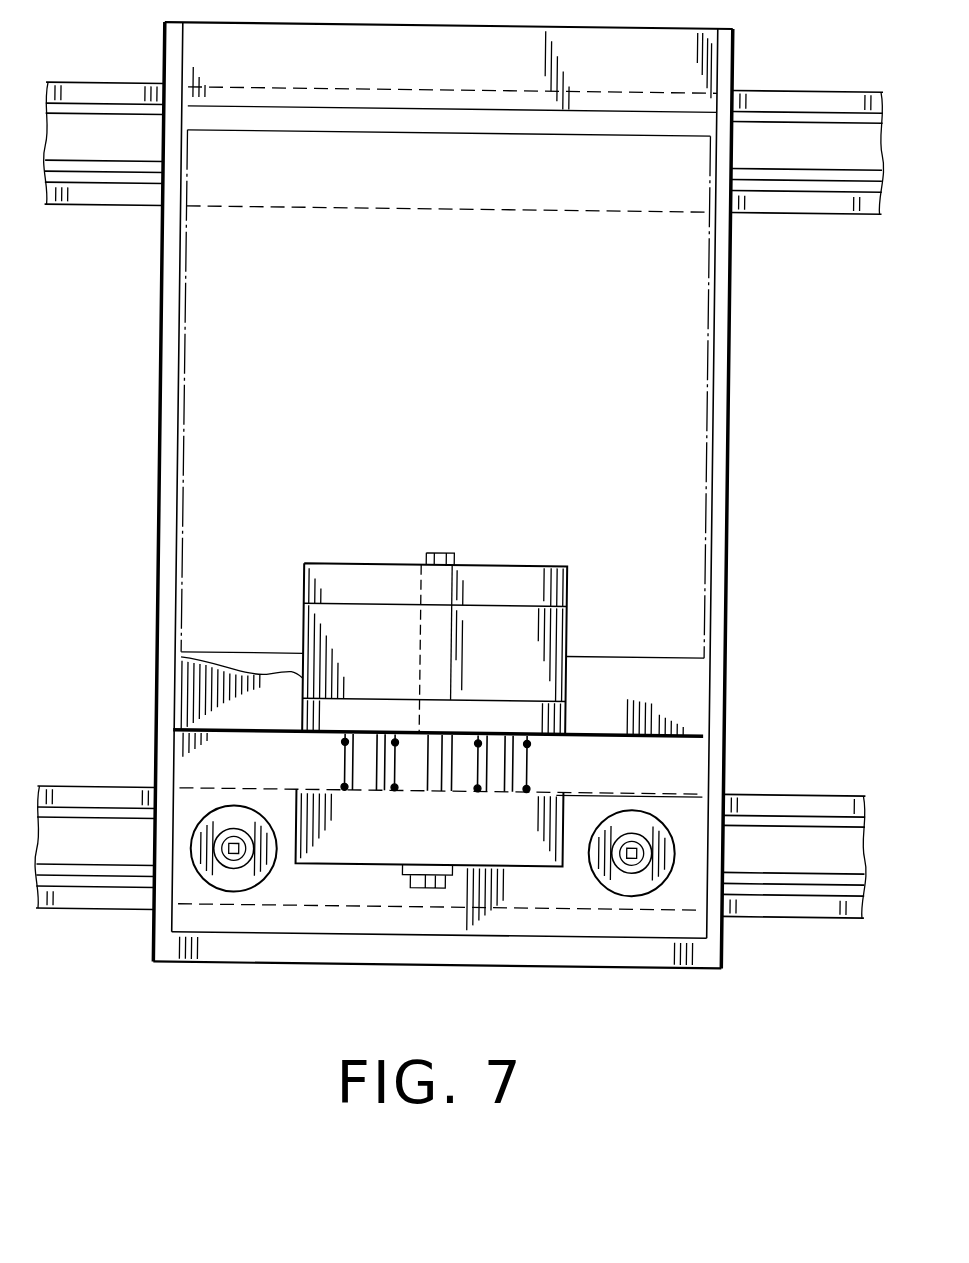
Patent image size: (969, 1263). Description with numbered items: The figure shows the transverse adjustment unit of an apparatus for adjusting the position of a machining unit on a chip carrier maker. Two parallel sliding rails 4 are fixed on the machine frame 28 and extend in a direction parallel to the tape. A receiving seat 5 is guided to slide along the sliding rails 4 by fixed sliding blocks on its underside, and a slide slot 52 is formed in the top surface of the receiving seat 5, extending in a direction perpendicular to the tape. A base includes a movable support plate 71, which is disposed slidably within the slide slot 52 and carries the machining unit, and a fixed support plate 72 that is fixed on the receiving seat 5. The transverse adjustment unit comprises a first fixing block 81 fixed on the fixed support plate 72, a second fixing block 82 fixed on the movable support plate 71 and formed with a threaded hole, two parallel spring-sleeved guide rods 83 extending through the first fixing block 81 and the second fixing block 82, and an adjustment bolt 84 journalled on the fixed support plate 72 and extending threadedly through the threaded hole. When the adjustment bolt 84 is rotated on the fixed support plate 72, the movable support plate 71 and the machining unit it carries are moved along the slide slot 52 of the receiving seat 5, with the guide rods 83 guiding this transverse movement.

The sliding rail 4 is at (772, 158).
The machine frame 28 is at (805, 203).
The receiving seat 5 is at (722, 565).
The slide slot 52 is at (170, 943).
The movable support plate 71 is at (700, 708).
The fixed support plate 72 is at (373, 923).
The first fixing block 81 is at (333, 870).
The second fixing block 82 is at (570, 660).
The spring-sleeved guide rod 83 is at (367, 773).
The adjustment bolt 84 is at (440, 750).